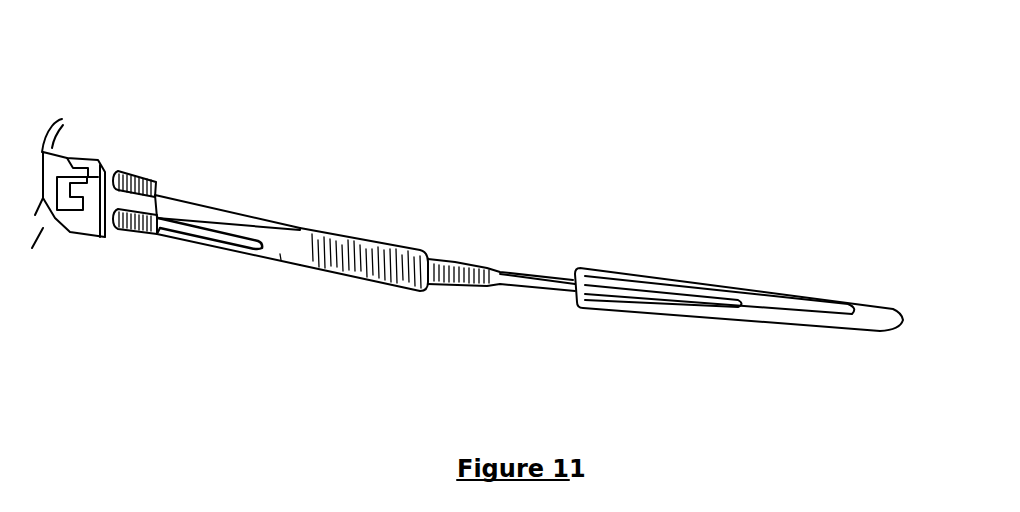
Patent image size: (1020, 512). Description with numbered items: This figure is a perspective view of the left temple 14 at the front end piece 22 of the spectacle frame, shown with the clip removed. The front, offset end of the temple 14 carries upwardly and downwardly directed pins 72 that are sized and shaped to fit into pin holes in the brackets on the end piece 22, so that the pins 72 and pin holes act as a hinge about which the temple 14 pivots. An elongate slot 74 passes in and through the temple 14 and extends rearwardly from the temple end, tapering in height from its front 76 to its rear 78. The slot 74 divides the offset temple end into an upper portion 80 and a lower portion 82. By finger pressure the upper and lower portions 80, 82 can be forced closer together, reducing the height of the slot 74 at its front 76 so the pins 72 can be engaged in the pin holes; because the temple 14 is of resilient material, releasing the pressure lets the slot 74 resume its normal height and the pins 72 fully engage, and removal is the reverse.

The front end piece 22 is at (58, 142).
The slot front 76 is at (108, 178).
The elongate slot 74 is at (152, 228).
The pins 72 is at (143, 206).
The upper portion 80 is at (187, 200).
The slot rear 78 is at (270, 237).
The lower portion 82 is at (193, 240).
The left temple 14 is at (357, 237).